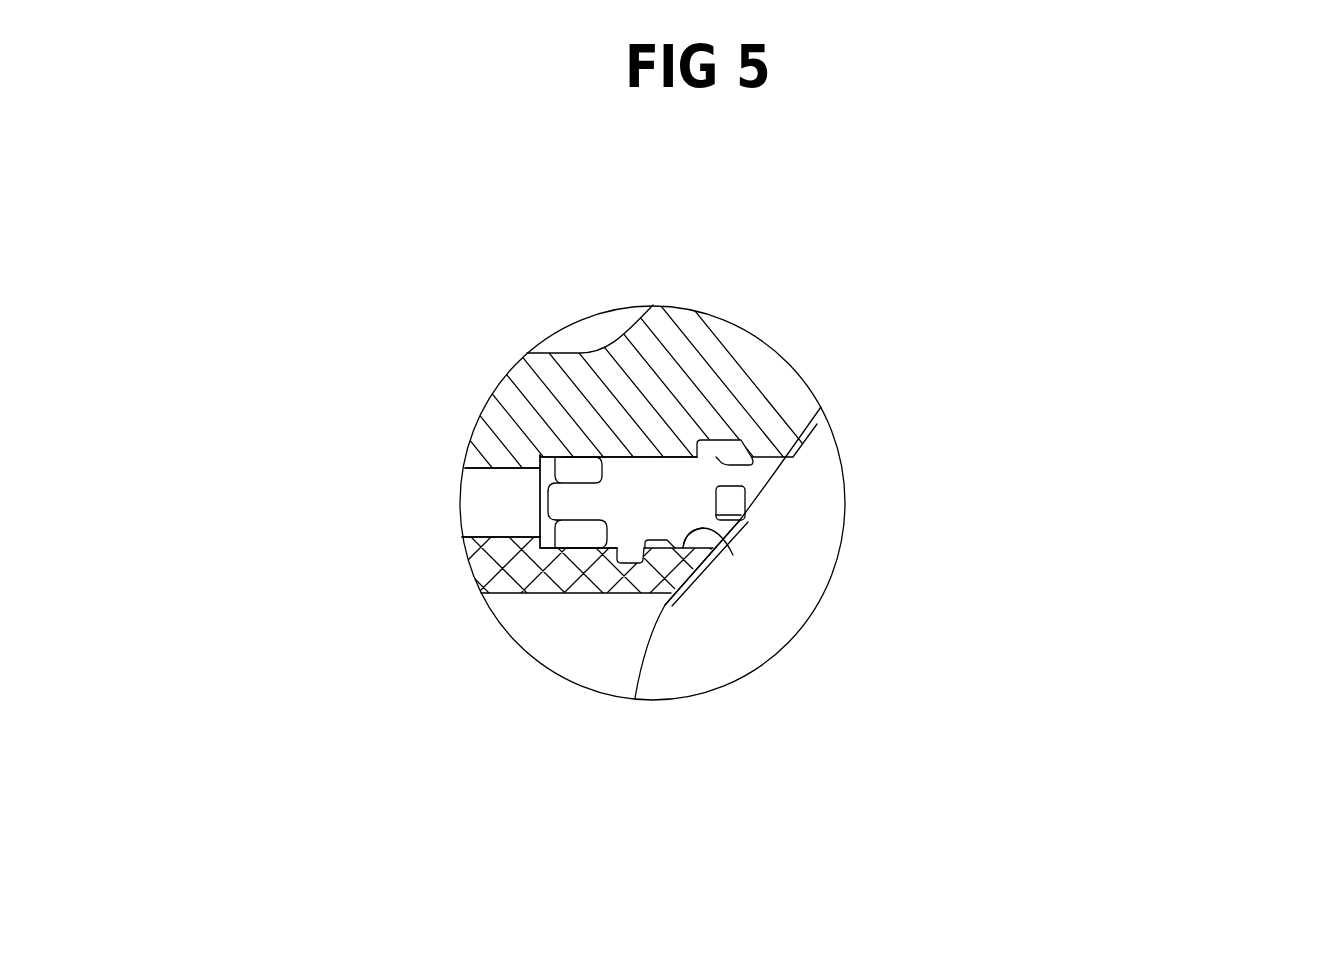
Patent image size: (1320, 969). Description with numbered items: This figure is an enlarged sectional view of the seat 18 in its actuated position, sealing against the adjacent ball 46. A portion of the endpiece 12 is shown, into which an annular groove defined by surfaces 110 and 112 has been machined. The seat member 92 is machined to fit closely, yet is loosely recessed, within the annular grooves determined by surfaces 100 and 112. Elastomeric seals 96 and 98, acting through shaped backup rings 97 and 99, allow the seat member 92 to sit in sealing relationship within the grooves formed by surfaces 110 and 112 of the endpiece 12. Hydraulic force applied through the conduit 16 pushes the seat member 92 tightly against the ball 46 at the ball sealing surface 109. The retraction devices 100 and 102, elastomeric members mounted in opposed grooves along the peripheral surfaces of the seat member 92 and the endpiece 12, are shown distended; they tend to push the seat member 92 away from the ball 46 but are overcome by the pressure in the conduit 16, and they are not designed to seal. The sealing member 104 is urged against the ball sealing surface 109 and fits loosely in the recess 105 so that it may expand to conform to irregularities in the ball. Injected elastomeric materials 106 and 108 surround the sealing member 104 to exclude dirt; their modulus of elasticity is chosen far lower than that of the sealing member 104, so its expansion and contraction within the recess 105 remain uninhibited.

The endpiece 12 is at (530, 382).
The conduit 16 is at (487, 513).
The seat 18 is at (750, 330).
The ball 46 is at (782, 537).
The seat member 92 is at (621, 470).
The elastomeric seal 96 is at (545, 476).
The shaped backup ring 97 is at (590, 455).
The elastomeric seal 98 is at (572, 550).
The shaped backup ring 99 is at (600, 549).
The retraction device 100 is at (723, 447).
The retraction device 102 is at (641, 558).
The sealing member 104 is at (745, 500).
The recess 105 is at (773, 487).
The injected elastomeric material 106 is at (775, 481).
The injected elastomeric material 108 is at (745, 520).
The ball sealing surface 109 is at (710, 548).
The groove surface 110 is at (640, 492).
The groove surface 112 is at (733, 555).